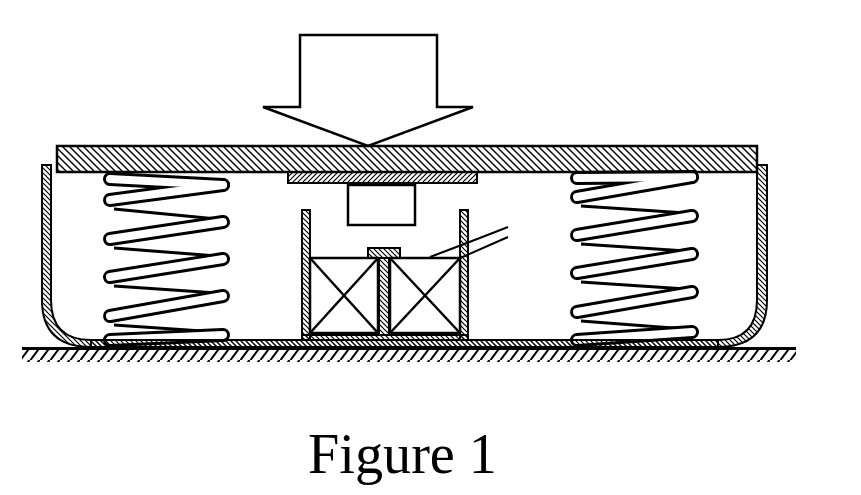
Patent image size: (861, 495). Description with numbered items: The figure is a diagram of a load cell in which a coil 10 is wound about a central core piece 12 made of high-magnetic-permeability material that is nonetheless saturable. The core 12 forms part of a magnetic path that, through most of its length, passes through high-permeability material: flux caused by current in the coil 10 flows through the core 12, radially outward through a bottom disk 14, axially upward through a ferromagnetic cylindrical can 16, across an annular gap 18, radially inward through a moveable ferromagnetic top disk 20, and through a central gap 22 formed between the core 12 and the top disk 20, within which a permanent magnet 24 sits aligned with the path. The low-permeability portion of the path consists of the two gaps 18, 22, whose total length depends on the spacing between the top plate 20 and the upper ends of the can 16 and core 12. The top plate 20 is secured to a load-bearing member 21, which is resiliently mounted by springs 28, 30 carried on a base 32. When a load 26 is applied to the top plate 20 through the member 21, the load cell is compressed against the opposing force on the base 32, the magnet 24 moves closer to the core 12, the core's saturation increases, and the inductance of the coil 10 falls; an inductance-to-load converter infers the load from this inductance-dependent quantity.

The coil 10 is at (430, 325).
The central core piece 12 is at (350, 283).
The bottom disk 14 is at (318, 345).
The ferromagnetic cylindrical can 16 is at (470, 303).
The annular gap 18 is at (462, 198).
The moveable ferromagnetic top disk 20 is at (460, 170).
The load-bearing member 21 is at (550, 167).
The central gap 22 is at (380, 235).
The permanent magnet 24 is at (362, 198).
The load 26 is at (385, 77).
The spring 28 is at (213, 297).
The spring 30 is at (600, 310).
The base 32 is at (771, 283).